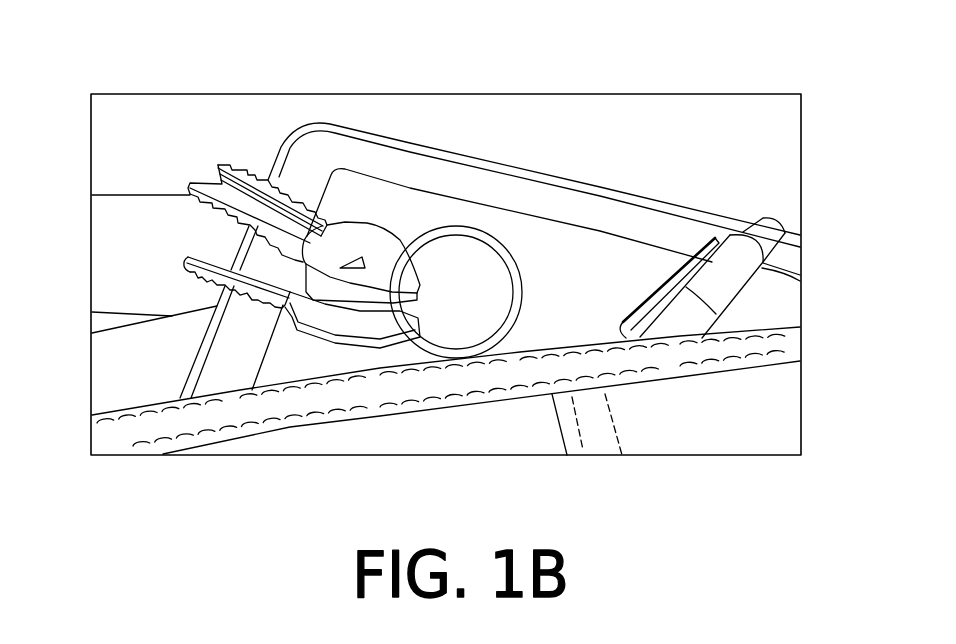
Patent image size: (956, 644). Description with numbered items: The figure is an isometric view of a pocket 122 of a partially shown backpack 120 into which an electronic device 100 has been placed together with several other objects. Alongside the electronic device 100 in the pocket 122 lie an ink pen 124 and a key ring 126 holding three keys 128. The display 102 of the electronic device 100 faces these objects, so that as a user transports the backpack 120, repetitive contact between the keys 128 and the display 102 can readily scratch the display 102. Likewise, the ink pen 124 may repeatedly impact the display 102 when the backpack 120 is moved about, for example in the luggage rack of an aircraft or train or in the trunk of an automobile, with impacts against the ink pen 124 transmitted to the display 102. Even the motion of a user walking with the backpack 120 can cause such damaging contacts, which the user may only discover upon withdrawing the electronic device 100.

The electronic device 100 is at (496, 160).
The display 102 is at (611, 275).
The backpack 120 is at (697, 448).
The pocket 122 is at (128, 409).
The ink pen 124 is at (762, 289).
The key ring 126 is at (503, 246).
The keys 128 is at (240, 167).